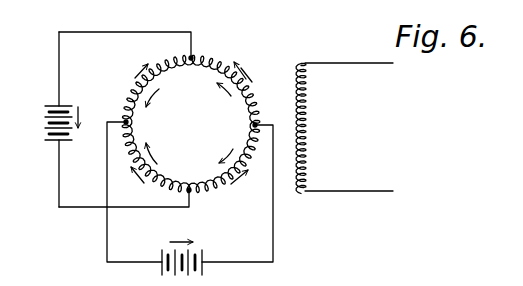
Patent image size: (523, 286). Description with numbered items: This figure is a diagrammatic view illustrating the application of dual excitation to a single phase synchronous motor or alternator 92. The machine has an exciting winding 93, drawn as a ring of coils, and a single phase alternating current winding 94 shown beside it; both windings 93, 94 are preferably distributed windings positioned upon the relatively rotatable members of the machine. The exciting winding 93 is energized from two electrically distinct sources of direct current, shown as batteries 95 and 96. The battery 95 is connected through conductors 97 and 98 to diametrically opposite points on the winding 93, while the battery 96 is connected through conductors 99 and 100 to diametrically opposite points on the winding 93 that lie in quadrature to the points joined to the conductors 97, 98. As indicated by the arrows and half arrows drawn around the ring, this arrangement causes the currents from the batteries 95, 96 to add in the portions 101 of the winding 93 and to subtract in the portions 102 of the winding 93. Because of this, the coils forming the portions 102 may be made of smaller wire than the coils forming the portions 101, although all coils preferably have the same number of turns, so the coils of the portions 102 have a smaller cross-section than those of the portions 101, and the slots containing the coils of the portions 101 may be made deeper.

The single phase synchronous motor or alternator 92 is at (250, 66).
The exciting winding 93 is at (252, 91).
The single phase alternating current winding 94 is at (306, 136).
The battery 95 is at (44, 117).
The battery 96 is at (160, 264).
The conductor 97 is at (78, 208).
The conductor 98 is at (127, 29).
The conductor 99 is at (273, 228).
The conductor 100 is at (107, 173).
The portions of the winding 101 is at (216, 62).
The portions of the winding 102 is at (134, 101).